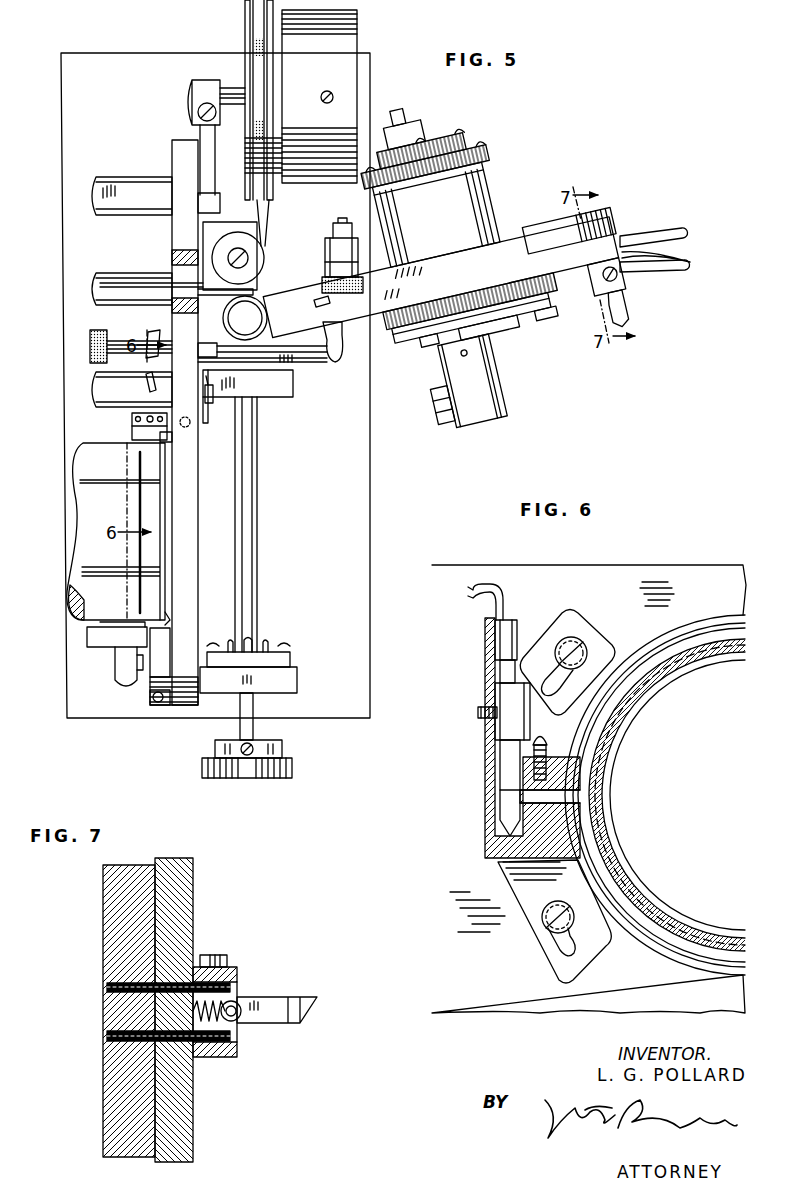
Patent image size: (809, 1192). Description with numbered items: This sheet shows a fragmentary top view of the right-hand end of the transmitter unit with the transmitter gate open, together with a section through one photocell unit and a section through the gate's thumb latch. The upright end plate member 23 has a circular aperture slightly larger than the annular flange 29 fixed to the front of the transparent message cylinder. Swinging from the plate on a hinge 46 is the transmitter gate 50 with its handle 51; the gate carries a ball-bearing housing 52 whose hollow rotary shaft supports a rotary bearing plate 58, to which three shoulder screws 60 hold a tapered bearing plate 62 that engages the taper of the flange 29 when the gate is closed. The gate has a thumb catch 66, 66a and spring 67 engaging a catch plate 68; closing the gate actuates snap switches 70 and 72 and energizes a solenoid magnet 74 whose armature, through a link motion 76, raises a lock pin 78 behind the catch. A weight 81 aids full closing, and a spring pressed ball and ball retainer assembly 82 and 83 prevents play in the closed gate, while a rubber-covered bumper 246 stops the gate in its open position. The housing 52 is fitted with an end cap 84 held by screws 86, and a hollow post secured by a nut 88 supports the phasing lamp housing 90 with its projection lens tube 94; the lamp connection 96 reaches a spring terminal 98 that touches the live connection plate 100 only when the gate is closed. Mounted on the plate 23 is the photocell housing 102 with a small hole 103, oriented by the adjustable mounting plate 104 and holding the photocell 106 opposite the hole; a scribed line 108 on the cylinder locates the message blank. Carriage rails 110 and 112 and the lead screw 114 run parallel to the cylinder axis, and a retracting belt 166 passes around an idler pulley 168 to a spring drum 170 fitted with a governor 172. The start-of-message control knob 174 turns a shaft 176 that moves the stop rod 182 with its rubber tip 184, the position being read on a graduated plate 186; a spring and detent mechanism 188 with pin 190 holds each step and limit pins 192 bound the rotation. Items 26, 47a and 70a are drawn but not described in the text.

In FIG. 5, the upright end support plate member 23 is at (198, 480).
In FIG. 6, the upright end support plate member 23 is at (597, 576).
In FIG. 5, the ring 26 is at (80, 490).
In FIG. 6, the ring 26 is at (636, 902).
In FIG. 5, the annular flange 29 is at (168, 618).
In FIG. 6, the annular flange 29 is at (698, 962).
In FIG. 5, the hinge 46 is at (258, 296).
In FIG. 5, the roller groove 47a is at (258, 318).
In FIG. 5, the transmitter gate 50 is at (452, 286).
In FIG. 7, the transmitter gate 50 is at (193, 902).
In FIG. 5, the handle 51 is at (660, 233).
In FIG. 5, the ball-bearing housing 52 is at (488, 202).
In FIG. 5, the rotary bearing plate 58 is at (546, 288).
In FIG. 5, the shoulder screws 60 is at (512, 323).
In FIG. 5, the tapered bearing plate 62 is at (428, 336).
In FIG. 5, the thumb catch 66 is at (672, 268).
In FIG. 5, the thumb catch 66a is at (624, 320).
In FIG. 7, the thumb catch 66a is at (287, 1000).
In FIG. 5, the spring 67 is at (691, 258).
In FIG. 5, the catch plate 68 is at (174, 687).
In FIG. 5, the snap switch 70 is at (212, 343).
In FIG. 5, the lever strip 70a is at (246, 352).
In FIG. 5, the snap switch 72 is at (162, 645).
In FIG. 5, the solenoid magnet 74 is at (104, 636).
In FIG. 5, the link motion 76 is at (138, 682).
In FIG. 5, the lock pin 78 is at (158, 705).
In FIG. 5, the weight 81 is at (586, 224).
In FIG. 7, the weight 81 is at (105, 945).
In FIG. 5, the spring pressed ball 82 is at (598, 292).
In FIG. 7, the spring pressed ball 82 is at (240, 1004).
In FIG. 7, the ball retainer 83 is at (222, 1057).
In FIG. 5, the end cap 84 is at (486, 160).
In FIG. 5, the screws 86 is at (472, 148).
In FIG. 5, the nut 88 is at (406, 134).
In FIG. 5, the phasing lamp housing 90 is at (506, 400).
In FIG. 5, the tube 94 is at (437, 404).
In FIG. 5, the connection 96 is at (318, 300).
In FIG. 5, the spring terminal 98 is at (337, 366).
In FIG. 5, the live connection plate 100 is at (209, 404).
In FIG. 5, the photocell housing 102 is at (132, 432).
In FIG. 6, the photocell housing 102 is at (490, 845).
In FIG. 6, the hole 103 is at (590, 797).
In FIG. 6, the adjustable photocell mounting plate 104 is at (596, 652).
In FIG. 6, the photocell 106 is at (503, 790).
In FIG. 5, the scribed line 108 is at (142, 521).
In FIG. 6, the scribed line 108 is at (613, 778).
In FIG. 5, the front carriage rail 110 is at (95, 399).
In FIG. 5, the rear carriage rail 112 is at (95, 193).
In FIG. 5, the lead screw 114 is at (95, 292).
In FIG. 5, the retracting belt 166 is at (271, 216).
In FIG. 5, the idler pulley 168 is at (231, 240).
In FIG. 5, the spring drum 170 is at (256, 36).
In FIG. 5, the governor mechanism 172 is at (352, 42).
In FIG. 5, the knob 174 is at (284, 750).
In FIG. 5, the shaft 176 is at (258, 462).
In FIG. 5, the shaft 182 is at (156, 334).
In FIG. 5, the rubber tip 184 is at (92, 347).
In FIG. 5, the graduated plate 186 is at (298, 682).
In FIG. 5, the spring and detent mechanism 188 is at (292, 658).
In FIG. 5, the pin 190 is at (251, 640).
In FIG. 5, the limit pins 192 is at (230, 640).
In FIG. 5, the rubber-covered bumper 246 is at (368, 290).